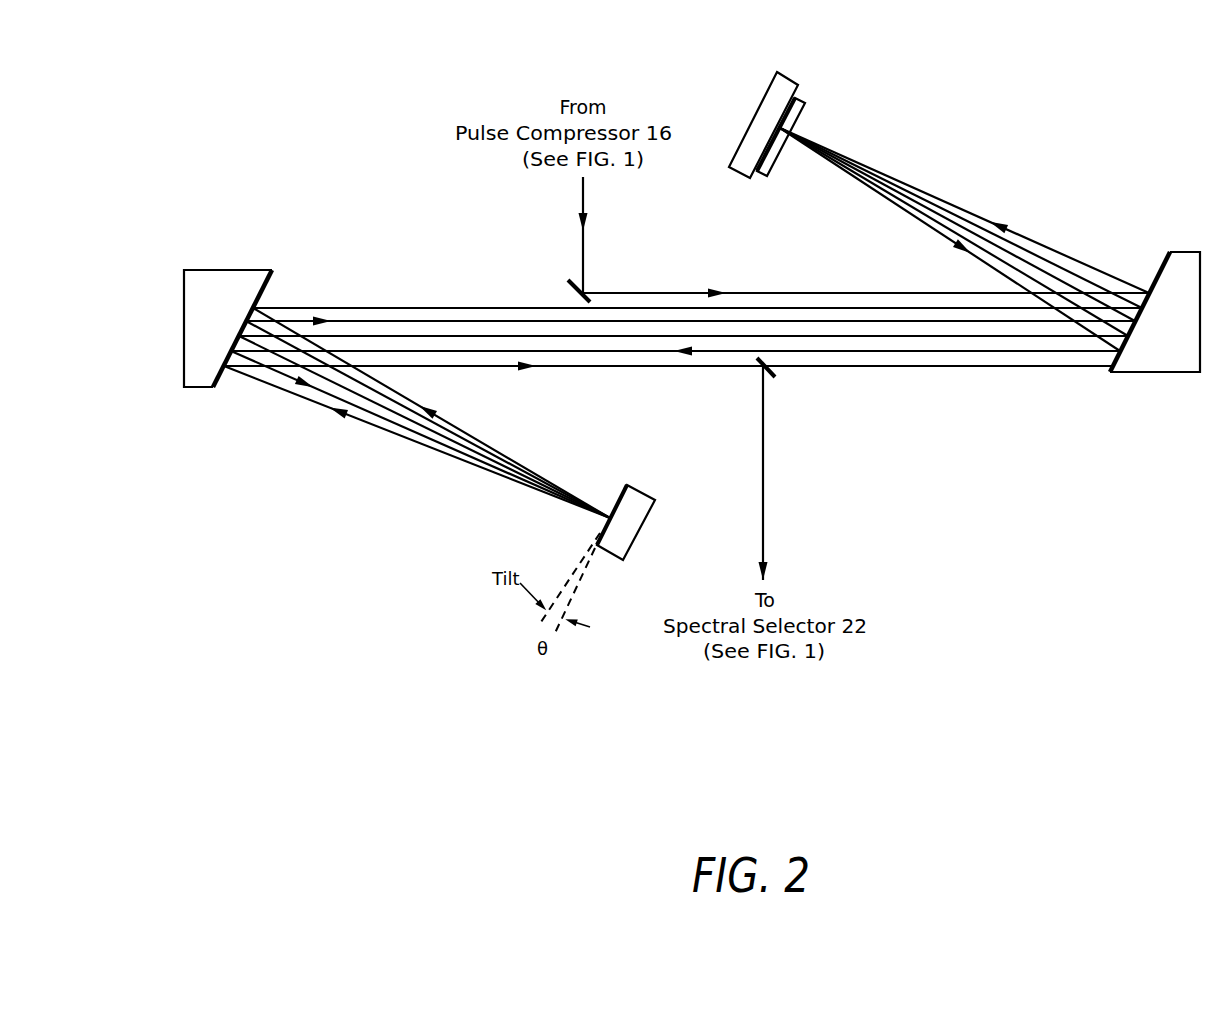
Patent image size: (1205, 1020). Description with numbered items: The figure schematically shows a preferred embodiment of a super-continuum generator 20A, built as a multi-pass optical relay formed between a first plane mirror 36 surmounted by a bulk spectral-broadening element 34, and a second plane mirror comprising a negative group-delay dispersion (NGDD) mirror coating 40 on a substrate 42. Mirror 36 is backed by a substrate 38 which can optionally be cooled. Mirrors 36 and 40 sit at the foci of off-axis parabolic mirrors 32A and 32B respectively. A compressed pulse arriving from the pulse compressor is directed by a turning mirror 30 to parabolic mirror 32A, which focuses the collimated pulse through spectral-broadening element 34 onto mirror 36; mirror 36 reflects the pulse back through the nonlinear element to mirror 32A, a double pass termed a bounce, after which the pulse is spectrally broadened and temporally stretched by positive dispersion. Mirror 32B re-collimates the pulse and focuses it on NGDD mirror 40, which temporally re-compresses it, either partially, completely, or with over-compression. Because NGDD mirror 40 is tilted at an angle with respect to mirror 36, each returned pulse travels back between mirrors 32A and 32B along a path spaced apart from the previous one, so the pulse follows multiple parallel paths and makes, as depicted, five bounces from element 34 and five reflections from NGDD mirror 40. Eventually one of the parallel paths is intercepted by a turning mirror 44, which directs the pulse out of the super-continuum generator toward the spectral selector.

The super-continuum generator 20A is at (1003, 680).
The turning mirror 30 is at (570, 288).
The off-axis parabolic mirror 32A is at (1163, 267).
The off-axis parabolic mirror 32B is at (262, 282).
The bulk spectral-broadening element 34 is at (800, 121).
The first plane mirror 36 is at (797, 91).
The substrate 38 is at (766, 94).
The NGDD mirror coating 40 is at (617, 500).
The substrate 42 is at (647, 512).
The turning mirror 44 is at (777, 369).